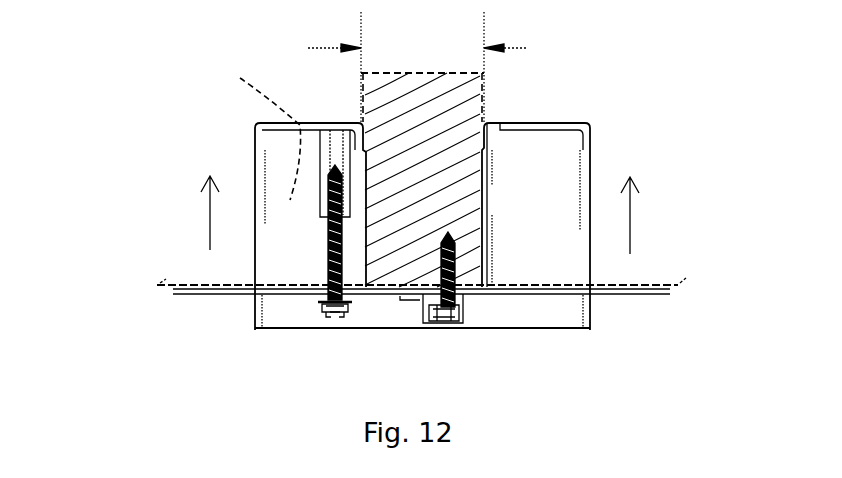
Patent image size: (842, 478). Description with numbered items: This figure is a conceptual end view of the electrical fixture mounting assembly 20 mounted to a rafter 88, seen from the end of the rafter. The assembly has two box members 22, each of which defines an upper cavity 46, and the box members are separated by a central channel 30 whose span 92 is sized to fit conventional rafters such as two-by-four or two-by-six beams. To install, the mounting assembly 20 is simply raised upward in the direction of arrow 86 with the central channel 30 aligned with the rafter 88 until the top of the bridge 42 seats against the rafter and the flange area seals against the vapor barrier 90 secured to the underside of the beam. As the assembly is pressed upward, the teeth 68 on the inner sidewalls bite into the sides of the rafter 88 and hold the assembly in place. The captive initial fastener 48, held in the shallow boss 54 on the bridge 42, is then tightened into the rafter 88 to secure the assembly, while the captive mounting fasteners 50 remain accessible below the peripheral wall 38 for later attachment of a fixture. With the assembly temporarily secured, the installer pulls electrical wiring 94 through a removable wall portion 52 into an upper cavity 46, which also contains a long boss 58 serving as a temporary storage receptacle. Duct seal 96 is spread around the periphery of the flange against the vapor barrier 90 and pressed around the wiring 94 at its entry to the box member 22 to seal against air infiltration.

The electrical fixture mounting assembly 20 is at (158, 138).
The box member 22 is at (592, 128).
The central channel 30 is at (430, 174).
The peripheral wall 38 is at (590, 311).
The bridge 42 is at (388, 293).
The upper cavity 46 is at (309, 243).
The captive initial fastener 48 is at (453, 294).
The captive mounting fastener 50 is at (320, 300).
The removable wall portion 52 is at (305, 125).
The shallow boss 54 is at (436, 317).
The long boss 58 is at (322, 176).
The teeth 68 is at (368, 143).
The arrow 86 is at (210, 221).
The rafter 88 is at (420, 163).
The vapor barrier 90 is at (679, 292).
The span 92 is at (433, 67).
The electrical wiring 94 is at (258, 82).
The duct seal 96 is at (322, 134).